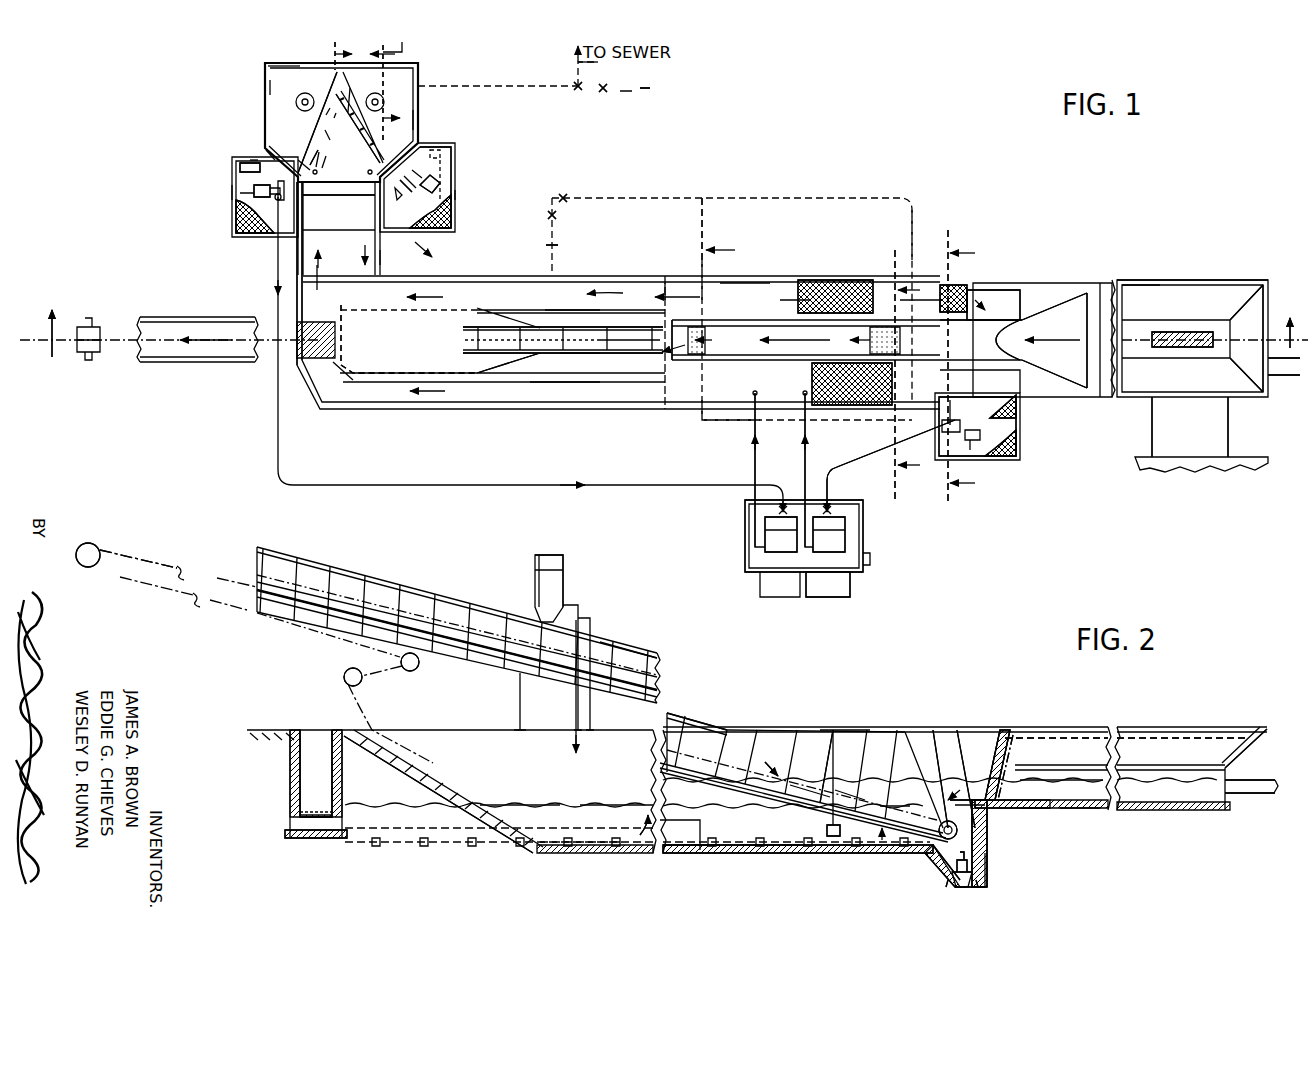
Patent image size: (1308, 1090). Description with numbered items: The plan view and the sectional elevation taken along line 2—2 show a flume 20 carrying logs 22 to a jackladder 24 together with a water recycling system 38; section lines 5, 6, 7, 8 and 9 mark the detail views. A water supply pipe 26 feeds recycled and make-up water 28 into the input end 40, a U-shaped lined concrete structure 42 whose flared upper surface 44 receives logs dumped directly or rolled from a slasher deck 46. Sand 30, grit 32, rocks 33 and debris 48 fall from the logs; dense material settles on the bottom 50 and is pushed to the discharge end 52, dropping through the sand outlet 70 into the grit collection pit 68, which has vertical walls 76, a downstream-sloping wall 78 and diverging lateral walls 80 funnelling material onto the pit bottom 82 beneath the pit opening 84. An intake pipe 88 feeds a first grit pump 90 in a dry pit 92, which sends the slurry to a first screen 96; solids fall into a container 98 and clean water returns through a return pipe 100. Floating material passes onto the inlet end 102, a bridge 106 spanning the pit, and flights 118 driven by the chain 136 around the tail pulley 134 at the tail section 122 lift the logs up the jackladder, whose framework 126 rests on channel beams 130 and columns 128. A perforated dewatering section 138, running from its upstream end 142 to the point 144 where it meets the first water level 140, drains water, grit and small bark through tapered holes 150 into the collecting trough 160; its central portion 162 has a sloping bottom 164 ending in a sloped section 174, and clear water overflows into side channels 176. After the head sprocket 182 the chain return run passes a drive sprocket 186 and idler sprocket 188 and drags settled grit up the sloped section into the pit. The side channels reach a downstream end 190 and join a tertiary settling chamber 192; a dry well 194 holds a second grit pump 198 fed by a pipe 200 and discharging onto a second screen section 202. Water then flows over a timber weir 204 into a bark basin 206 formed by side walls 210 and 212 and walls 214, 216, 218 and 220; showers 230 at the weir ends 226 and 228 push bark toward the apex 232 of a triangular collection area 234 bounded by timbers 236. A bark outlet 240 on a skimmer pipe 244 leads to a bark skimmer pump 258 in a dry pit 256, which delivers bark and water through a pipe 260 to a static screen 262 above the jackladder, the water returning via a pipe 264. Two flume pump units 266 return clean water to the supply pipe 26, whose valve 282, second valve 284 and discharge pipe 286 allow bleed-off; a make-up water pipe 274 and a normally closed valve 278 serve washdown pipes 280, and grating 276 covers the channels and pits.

In FIG. 1, the line 2— 2 is at (666, 333).
In FIG. 1, the section line 5— 5 is at (956, 368).
In FIG. 1, the section line 6— 6 is at (917, 375).
In FIG. 1, the section line 7— 7 is at (712, 265).
In FIG. 1, the section line 8— 8 is at (364, 151).
In FIG. 1, the section line 9— 9 is at (401, 92).
In FIG. 1, the flume 20 is at (1177, 278).
In FIG. 2, the flume 20 is at (1088, 726).
In FIG. 1, the logs 22 is at (1200, 334).
In FIG. 2, the logs 22 is at (845, 770).
In FIG. 1, the jackladder 24 is at (545, 328).
In FIG. 1, the water supply pipe 26 is at (627, 94).
In FIG. 2, the water supply pipe 26 is at (1240, 796).
In FIG. 2, the water 28 is at (538, 800).
In FIG. 2, the sand 30 is at (1032, 812).
In FIG. 2, the grit 32 is at (582, 840).
In FIG. 2, the rocks 33 is at (1076, 812).
In FIG. 1, the water recycling system 38 is at (858, 488).
In FIG. 2, the water recycling system 38 is at (846, 860).
In FIG. 1, the water and log input end 40 is at (1140, 300).
In FIG. 2, the water and log input end 40 is at (1180, 742).
In FIG. 1, the lined concrete structure 42 is at (1227, 300).
In FIG. 2, the lined concrete structure 42 is at (1222, 742).
In FIG. 1, the upper surface 44 is at (1236, 385).
In FIG. 2, the upper surface 44 is at (1025, 740).
In FIG. 1, the slasher deck 46 is at (1152, 428).
In FIG. 2, the debris 48 is at (905, 780).
In FIG. 1, the bottom of the flume 50 is at (1080, 355).
In FIG. 1, the log discharge end 52 is at (966, 290).
In FIG. 2, the log discharge end 52 is at (990, 775).
In FIG. 1, the grit collection pit 68 is at (1000, 410).
In FIG. 2, the grit collection pit 68 is at (982, 880).
In FIG. 1, the sand outlet 70 is at (980, 340).
In FIG. 1, the vertical walls 76 is at (996, 296).
In FIG. 1, the sloping wall 78 is at (990, 316).
In FIG. 2, the laterally extending walls 80 is at (955, 872).
In FIG. 2, the bottom of the pit 82 is at (962, 886).
In FIG. 2, the pit opening 84 is at (940, 852).
In FIG. 2, the intake pipe 88 is at (968, 858).
In FIG. 1, the first grit pump 90 is at (950, 432).
In FIG. 1, the dry pit 92 is at (1020, 440).
In FIG. 1, the first screen 96 is at (848, 539).
In FIG. 1, the collection container 98 is at (838, 583).
In FIG. 1, the clean water return pipe 100 is at (803, 463).
In FIG. 2, the inlet end 102 is at (955, 798).
In FIG. 2, the bridge 106 is at (990, 812).
In FIG. 1, the flights 118 is at (573, 353).
In FIG. 2, the flights 118 is at (778, 852).
In FIG. 2, the tail section 122 is at (940, 838).
In FIG. 2, the framework 126 is at (690, 735).
In FIG. 2, the columns 128 is at (827, 828).
In FIG. 2, the channel beams 130 is at (818, 735).
In FIG. 1, the tail pulley 134 is at (912, 310).
In FIG. 2, the tail pulley 134 is at (978, 830).
In FIG. 1, the chain 136 is at (628, 353).
In FIG. 2, the chain 136 is at (185, 566).
In FIG. 2, the dewatering section 138 is at (810, 765).
In FIG. 2, the first water level 140 is at (805, 765).
In FIG. 1, the upstream end 142 is at (862, 404).
In FIG. 2, the upstream end 142 is at (945, 765).
In FIG. 1, the point 144 is at (695, 352).
In FIG. 2, the point 144 is at (770, 765).
In FIG. 1, the tapered holes 150 is at (865, 282).
In FIG. 1, the collecting trough 160 is at (745, 283).
In FIG. 2, the collecting trough 160 is at (645, 822).
In FIG. 1, the central portion 162 is at (668, 280).
In FIG. 2, the central portion 162 is at (620, 810).
In FIG. 2, the bottom 164 is at (684, 850).
In FIG. 1, the sloped section 174 is at (505, 365).
In FIG. 2, the sloped section 174 is at (378, 752).
In FIG. 1, the side channel 176 is at (570, 308).
In FIG. 1, the head sprocket 182 is at (98, 353).
In FIG. 2, the head sprocket 182 is at (92, 547).
In FIG. 2, the drive sprocket 186 is at (417, 668).
In FIG. 2, the idler sprocket 188 is at (360, 686).
In FIG. 1, the downstream end 190 is at (373, 298).
In FIG. 2, the downstream end 190 is at (310, 768).
In FIG. 1, the tertiary grit settling chamber 192 is at (300, 245).
In FIG. 1, the dry well 194 is at (250, 165).
In FIG. 1, the second grit pump 198 is at (254, 193).
In FIG. 1, the pipe 200 is at (320, 197).
In FIG. 1, the second section of the screen 202 is at (768, 526).
In FIG. 1, the timber weir 204 is at (339, 234).
In FIG. 1, the bark basin 206 is at (265, 130).
In FIG. 1, the vertical side wall 210 is at (240, 170).
In FIG. 1, the vertical side wall 212 is at (432, 150).
In FIG. 1, the vertical wall 214 is at (273, 82).
In FIG. 1, the vertical wall 216 is at (295, 66).
In FIG. 1, the vertical wall 218 is at (412, 118).
In FIG. 1, the vertical wall 220 is at (354, 197).
In FIG. 1, the end of the timber weir 226 is at (232, 190).
In FIG. 1, the end of the timber weir 228 is at (462, 195).
In FIG. 1, the water showers 230 is at (338, 174).
In FIG. 1, the apex 232 is at (345, 80).
In FIG. 1, the triangular bark collection area 234 is at (305, 158).
In FIG. 1, the timbers 236 is at (272, 155).
In FIG. 1, the bark outlet 240 is at (328, 135).
In FIG. 1, the bark skimmer pipe 244 is at (352, 128).
In FIG. 1, the dry pit 256 is at (440, 180).
In FIG. 1, the bark skimmer pump 258 is at (420, 190).
In FIG. 1, the pipe 260 is at (382, 254).
In FIG. 2, the static screen 262 is at (555, 585).
In FIG. 2, the pipe 264 is at (572, 700).
In FIG. 1, the flume pump units 266 is at (296, 102).
In FIG. 1, the water supply pipe 274 is at (552, 195).
In FIG. 1, the grating 276 is at (240, 222).
In FIG. 1, the normally closed valve 278 is at (566, 196).
In FIG. 1, the washdown pipes 280 is at (700, 212).
In FIG. 1, the valve 282 is at (603, 92).
In FIG. 1, the second valve 284 is at (574, 80).
In FIG. 1, the discharge pipe 286 is at (600, 68).